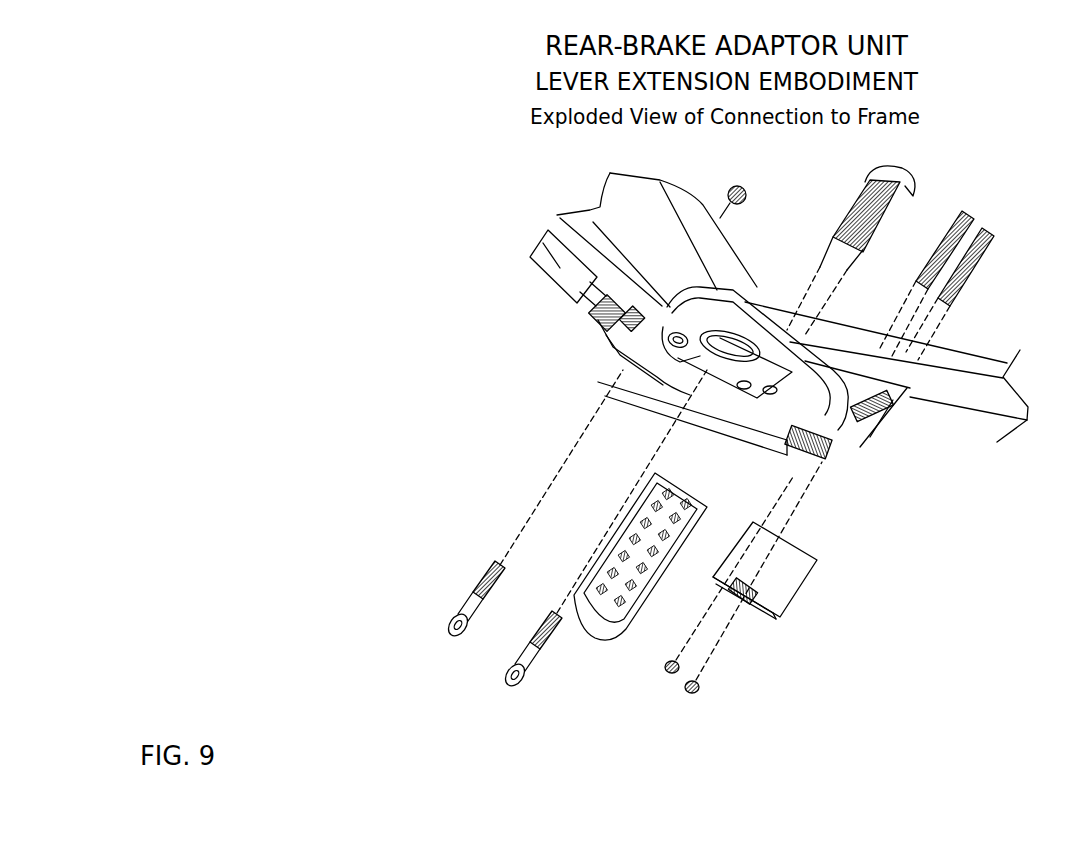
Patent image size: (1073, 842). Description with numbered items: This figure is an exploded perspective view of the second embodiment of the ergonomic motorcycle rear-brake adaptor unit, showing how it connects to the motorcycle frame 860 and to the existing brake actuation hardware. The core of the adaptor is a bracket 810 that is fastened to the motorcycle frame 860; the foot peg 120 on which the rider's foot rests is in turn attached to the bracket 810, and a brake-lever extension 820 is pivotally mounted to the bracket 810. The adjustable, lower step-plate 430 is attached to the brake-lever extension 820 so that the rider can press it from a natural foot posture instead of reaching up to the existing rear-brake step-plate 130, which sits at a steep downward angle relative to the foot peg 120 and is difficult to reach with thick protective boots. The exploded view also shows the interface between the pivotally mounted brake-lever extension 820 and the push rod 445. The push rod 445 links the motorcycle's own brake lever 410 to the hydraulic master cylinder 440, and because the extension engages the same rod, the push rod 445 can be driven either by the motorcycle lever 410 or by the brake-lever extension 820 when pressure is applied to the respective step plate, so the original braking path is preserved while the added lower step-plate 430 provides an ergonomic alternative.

The foot peg 120 is at (610, 628).
The rear-brake step-plate 130 is at (883, 430).
The brake lever 410 is at (723, 358).
The lower step-plate 430 is at (798, 582).
The hydraulic master cylinder 440 is at (548, 276).
The push rod 445 is at (587, 308).
The bracket 810 is at (788, 385).
The brake-lever extension 820 is at (781, 450).
The motorcycle frame 860 is at (657, 240).